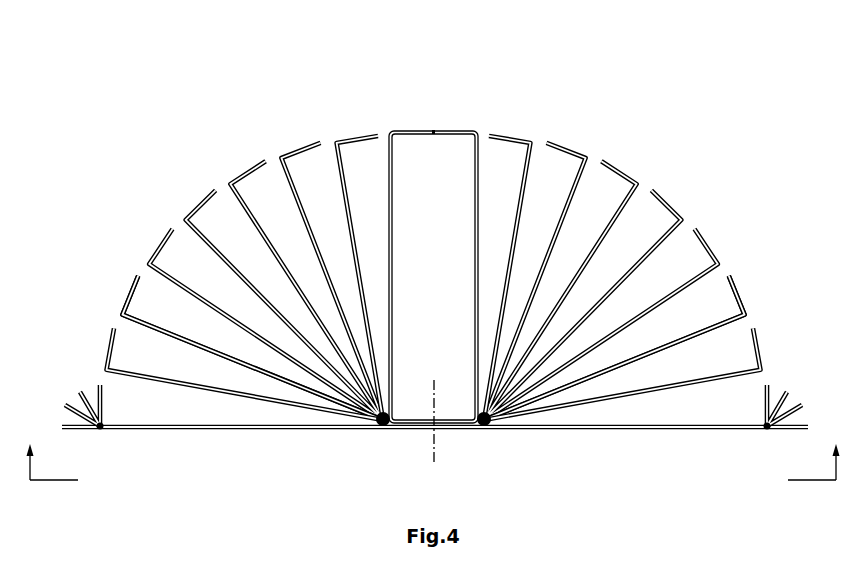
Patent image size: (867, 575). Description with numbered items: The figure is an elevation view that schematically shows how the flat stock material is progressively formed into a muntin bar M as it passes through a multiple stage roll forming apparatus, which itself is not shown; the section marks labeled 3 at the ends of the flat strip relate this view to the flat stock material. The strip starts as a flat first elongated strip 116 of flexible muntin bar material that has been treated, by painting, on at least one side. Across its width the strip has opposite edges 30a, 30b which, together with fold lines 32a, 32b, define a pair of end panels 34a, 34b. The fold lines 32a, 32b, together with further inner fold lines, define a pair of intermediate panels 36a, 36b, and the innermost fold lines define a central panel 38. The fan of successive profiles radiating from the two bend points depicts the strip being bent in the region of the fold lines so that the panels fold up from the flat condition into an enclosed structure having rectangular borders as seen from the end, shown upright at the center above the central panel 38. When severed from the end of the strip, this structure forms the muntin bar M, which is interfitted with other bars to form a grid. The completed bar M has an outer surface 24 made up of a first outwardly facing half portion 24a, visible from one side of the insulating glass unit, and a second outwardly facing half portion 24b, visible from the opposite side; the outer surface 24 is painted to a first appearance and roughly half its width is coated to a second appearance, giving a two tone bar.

The outer surface 24 is at (433, 270).
The first outwardly facing half portion 24a is at (228, 257).
The second outwardly facing half portion 24b is at (636, 265).
The edge of the strip 30a is at (316, 138).
The edge of the strip 30b is at (490, 137).
The fold line 32a is at (112, 317).
The fold line 32b is at (752, 313).
The end panel 34a is at (137, 277).
The end panel 34b is at (739, 275).
The intermediate panel 36a is at (135, 313).
The intermediate panel 36b is at (652, 349).
The central panel 38 is at (423, 422).
The first elongated strip 116 is at (237, 435).
The muntin bar M is at (427, 106).
The section line for FIG. 3 is at (433, 453).